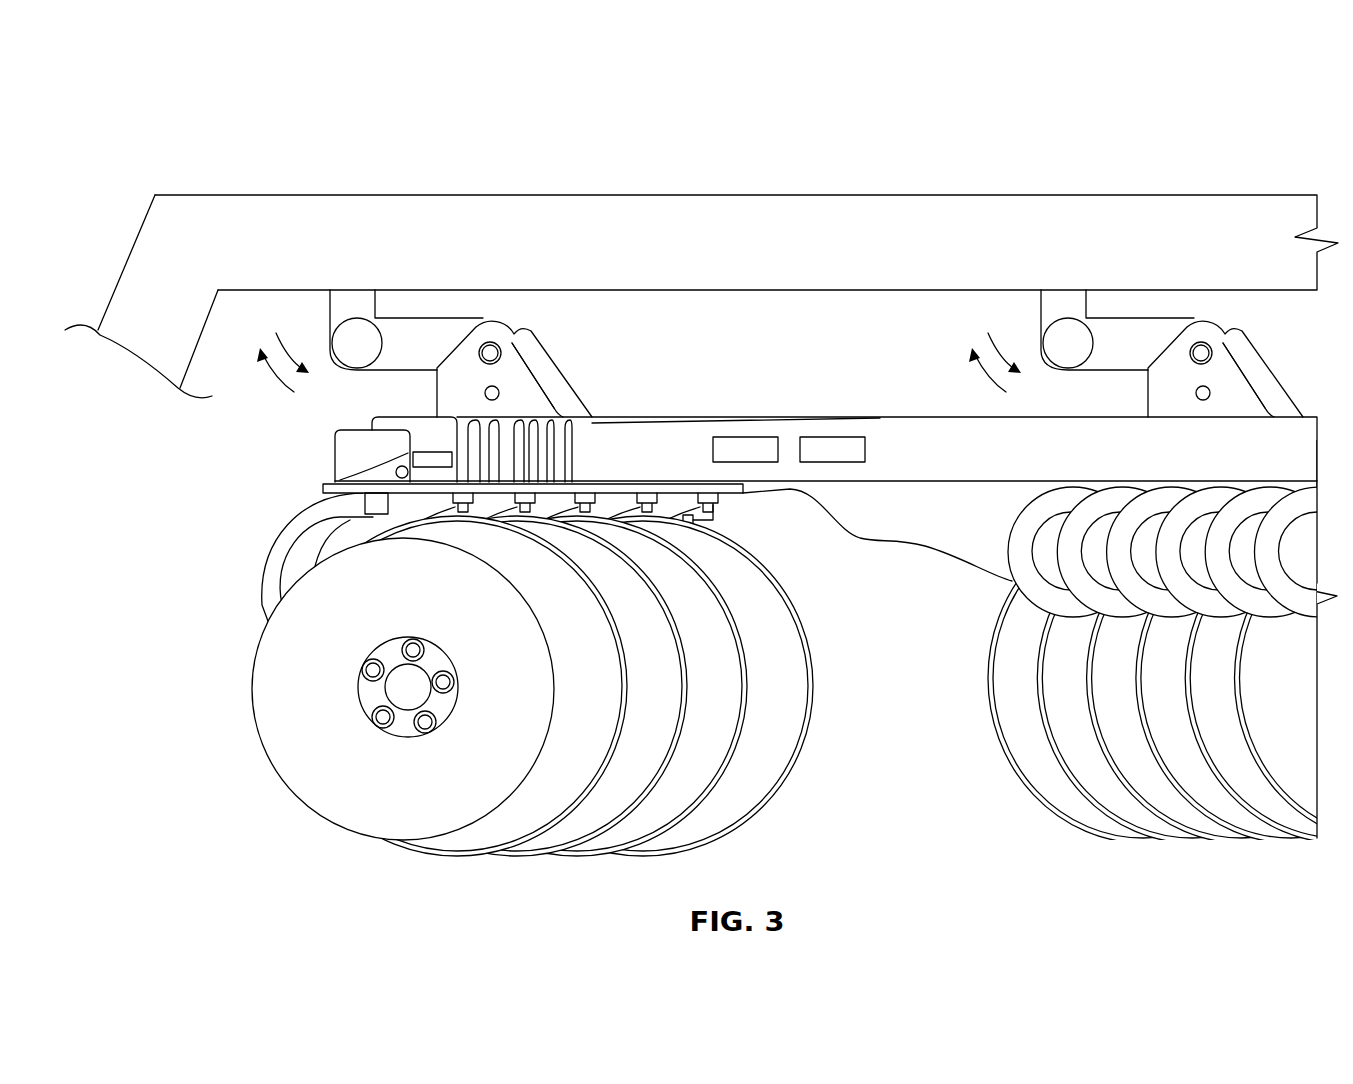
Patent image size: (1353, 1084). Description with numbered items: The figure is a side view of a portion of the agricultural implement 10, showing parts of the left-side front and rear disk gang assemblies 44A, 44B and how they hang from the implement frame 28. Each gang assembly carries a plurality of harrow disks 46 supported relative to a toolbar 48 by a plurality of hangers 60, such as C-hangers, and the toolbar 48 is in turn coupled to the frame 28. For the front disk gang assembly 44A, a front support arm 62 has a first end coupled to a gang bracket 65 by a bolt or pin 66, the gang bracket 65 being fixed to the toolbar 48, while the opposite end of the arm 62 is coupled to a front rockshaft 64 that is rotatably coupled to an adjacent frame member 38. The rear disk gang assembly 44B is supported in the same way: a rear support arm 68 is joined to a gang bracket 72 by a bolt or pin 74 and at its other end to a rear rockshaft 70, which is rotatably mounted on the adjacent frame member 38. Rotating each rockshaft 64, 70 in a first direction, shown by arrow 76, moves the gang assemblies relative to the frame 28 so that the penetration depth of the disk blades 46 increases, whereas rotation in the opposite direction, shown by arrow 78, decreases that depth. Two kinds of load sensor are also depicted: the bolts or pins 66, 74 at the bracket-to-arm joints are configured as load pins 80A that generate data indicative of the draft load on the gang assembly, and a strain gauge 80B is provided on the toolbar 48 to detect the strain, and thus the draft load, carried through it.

The agricultural implement 10 is at (147, 133).
The implement frame 28 is at (574, 189).
The frame member 38 is at (240, 194).
The front disk gang assembly 44A is at (597, 703).
The rear disk gang assembly 44B is at (964, 750).
The harrow disk 46 is at (306, 810).
The toolbar 48 is at (345, 440).
The hanger 60 is at (262, 549).
The front support arm 62 is at (503, 321).
The front rockshaft 64 is at (360, 355).
The gang bracket 65 is at (548, 384).
The bolt or pin 66 is at (489, 342).
The rear support arm 68 is at (1213, 321).
The rear rockshaft 70 is at (1071, 355).
The gang bracket 72 is at (1258, 387).
The bolt or pin 74 is at (1200, 342).
The arrow indicating first direction 76 is at (272, 378).
The arrow indicating second direction 78 is at (290, 356).
The load pin 80A is at (506, 348).
The strain gauge 80B is at (340, 480).